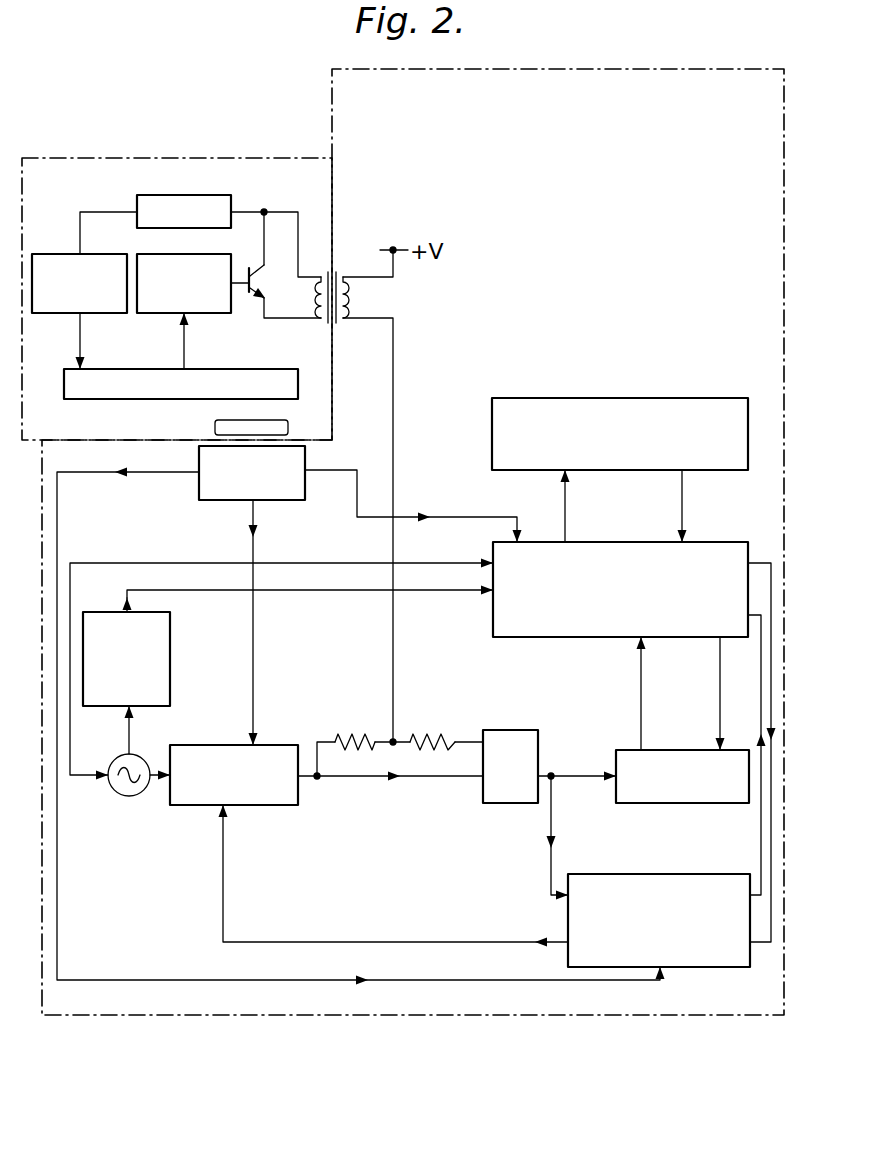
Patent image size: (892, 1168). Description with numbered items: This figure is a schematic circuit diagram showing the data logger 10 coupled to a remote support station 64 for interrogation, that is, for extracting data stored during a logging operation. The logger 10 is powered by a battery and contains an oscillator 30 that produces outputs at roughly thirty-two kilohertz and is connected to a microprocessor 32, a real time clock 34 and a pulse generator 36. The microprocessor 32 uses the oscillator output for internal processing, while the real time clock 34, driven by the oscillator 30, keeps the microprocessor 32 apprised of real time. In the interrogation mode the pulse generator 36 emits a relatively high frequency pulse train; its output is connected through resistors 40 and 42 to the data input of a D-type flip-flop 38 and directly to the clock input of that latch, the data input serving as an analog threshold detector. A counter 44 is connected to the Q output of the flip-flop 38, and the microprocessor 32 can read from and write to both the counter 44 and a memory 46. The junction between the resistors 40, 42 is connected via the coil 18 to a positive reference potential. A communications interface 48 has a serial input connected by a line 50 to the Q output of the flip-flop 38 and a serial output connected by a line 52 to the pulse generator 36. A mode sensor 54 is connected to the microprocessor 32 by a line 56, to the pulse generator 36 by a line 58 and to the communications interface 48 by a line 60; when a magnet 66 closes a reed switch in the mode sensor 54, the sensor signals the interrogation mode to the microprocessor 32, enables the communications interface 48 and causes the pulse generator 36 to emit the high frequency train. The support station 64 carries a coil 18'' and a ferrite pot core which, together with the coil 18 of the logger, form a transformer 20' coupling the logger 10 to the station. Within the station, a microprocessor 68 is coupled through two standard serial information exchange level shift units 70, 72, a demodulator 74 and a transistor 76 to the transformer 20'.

The data logger 10 is at (552, 69).
The support station 64 is at (186, 158).
The demodulator 74 is at (220, 195).
The level shift unit 70 is at (70, 254).
The level shift unit 72 is at (142, 254).
The transistor 76 is at (272, 276).
The transformer 20' is at (344, 281).
The coil 18 is at (381, 297).
The coil 18'' is at (294, 317).
The microprocessor 68 is at (196, 369).
The magnet 66 is at (215, 428).
The mode sensor 54 is at (199, 498).
The line 60 is at (385, 980).
The line 58 is at (256, 520).
The line 56 is at (446, 516).
The memory 46 is at (598, 398).
The microprocessor 32 is at (597, 542).
The real time clock 34 is at (170, 653).
The oscillator 30 is at (124, 795).
The pulse generator 36 is at (258, 805).
The resistor 40 is at (368, 733).
The resistor 42 is at (420, 733).
The D-type flip-flop 38 is at (520, 730).
The line 50 is at (553, 832).
The counter 44 is at (700, 803).
The communications interface 48 is at (638, 874).
The line 52 is at (385, 942).